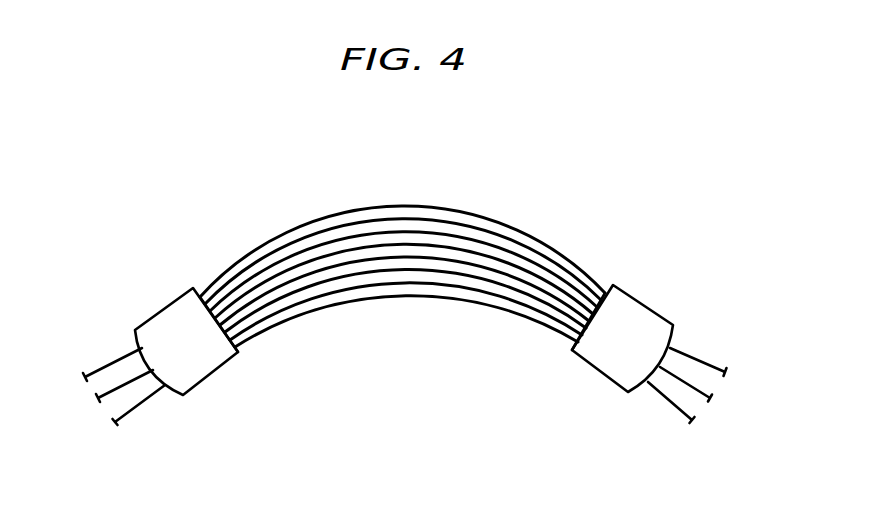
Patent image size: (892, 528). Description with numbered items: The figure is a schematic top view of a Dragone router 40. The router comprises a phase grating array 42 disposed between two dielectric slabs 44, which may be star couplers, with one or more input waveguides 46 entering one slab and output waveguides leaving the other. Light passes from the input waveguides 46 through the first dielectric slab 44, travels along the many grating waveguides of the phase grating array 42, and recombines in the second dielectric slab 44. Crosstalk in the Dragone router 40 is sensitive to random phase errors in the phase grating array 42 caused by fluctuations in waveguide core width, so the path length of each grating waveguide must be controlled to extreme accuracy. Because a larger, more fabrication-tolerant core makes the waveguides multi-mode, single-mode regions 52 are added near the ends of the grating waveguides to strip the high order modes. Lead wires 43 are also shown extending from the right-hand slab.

The Dragone router 40 is at (192, 220).
The phase grating array 42 is at (398, 195).
The connector lead wires 43 is at (705, 351).
The dielectric slab 44 is at (215, 373).
The input waveguide 46 is at (148, 420).
The single-mode region 52 is at (255, 332).